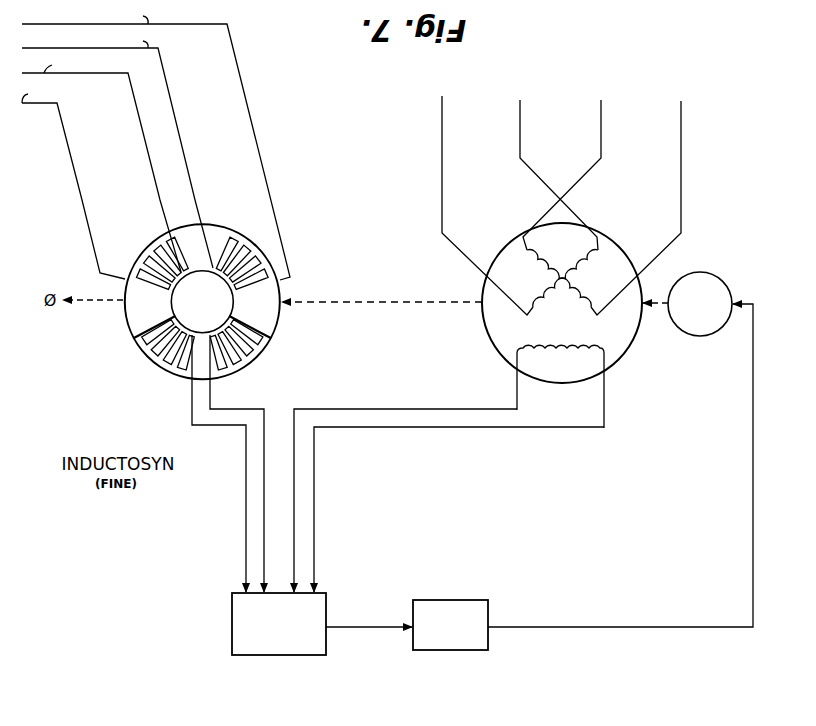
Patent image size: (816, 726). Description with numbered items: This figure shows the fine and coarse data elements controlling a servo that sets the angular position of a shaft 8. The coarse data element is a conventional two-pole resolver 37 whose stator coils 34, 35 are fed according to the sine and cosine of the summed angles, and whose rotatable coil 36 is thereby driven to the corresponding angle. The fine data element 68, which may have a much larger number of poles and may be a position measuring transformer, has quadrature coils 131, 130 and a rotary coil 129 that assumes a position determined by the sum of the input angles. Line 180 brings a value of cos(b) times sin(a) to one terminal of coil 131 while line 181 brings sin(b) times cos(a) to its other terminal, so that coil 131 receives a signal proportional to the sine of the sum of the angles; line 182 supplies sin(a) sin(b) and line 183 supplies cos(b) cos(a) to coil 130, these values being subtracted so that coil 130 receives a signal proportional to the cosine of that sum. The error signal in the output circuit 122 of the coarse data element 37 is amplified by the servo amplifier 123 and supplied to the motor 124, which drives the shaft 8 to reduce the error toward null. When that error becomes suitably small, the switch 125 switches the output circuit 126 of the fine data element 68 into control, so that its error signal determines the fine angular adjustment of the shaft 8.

The shaft 8 is at (357, 301).
The coil 34 is at (542, 311).
The coil 35 is at (568, 278).
The rotatable coil 36 is at (560, 386).
The coarse resolver 37 is at (497, 355).
The fine data element 68 is at (131, 338).
The output circuit 122 is at (312, 519).
The servo amplifier 123 is at (445, 601).
The motor 124 is at (712, 274).
The switch 125 is at (268, 655).
The output circuit 126 is at (246, 510).
The rotary coil 129 is at (252, 357).
The coil 130 is at (150, 255).
The coil 131 is at (238, 242).
The line 180 is at (248, 99).
The line 181 is at (175, 115).
The line 182 is at (142, 130).
The line 183 is at (70, 152).